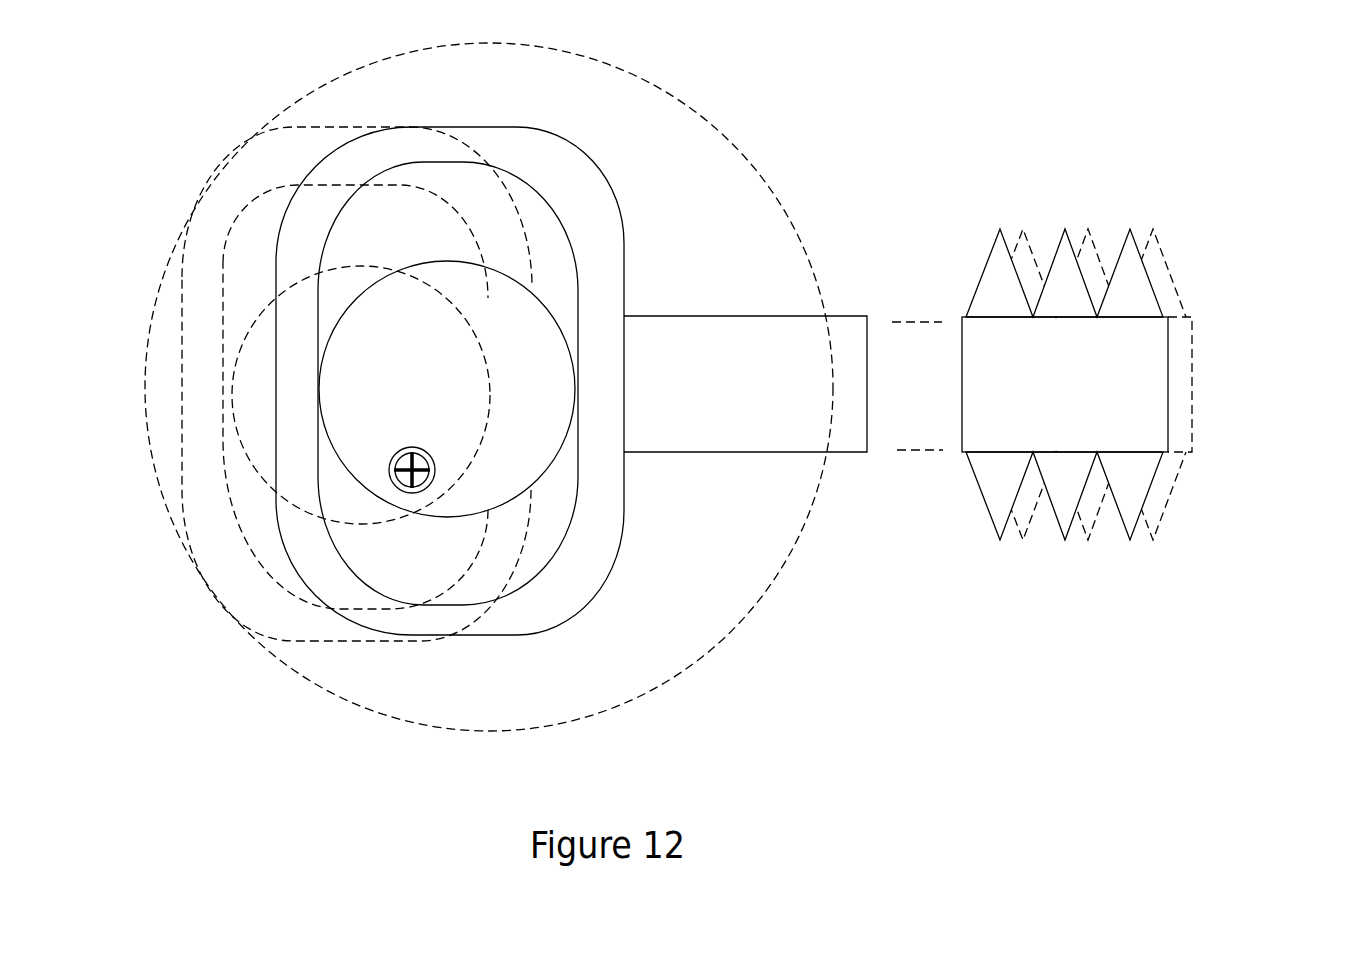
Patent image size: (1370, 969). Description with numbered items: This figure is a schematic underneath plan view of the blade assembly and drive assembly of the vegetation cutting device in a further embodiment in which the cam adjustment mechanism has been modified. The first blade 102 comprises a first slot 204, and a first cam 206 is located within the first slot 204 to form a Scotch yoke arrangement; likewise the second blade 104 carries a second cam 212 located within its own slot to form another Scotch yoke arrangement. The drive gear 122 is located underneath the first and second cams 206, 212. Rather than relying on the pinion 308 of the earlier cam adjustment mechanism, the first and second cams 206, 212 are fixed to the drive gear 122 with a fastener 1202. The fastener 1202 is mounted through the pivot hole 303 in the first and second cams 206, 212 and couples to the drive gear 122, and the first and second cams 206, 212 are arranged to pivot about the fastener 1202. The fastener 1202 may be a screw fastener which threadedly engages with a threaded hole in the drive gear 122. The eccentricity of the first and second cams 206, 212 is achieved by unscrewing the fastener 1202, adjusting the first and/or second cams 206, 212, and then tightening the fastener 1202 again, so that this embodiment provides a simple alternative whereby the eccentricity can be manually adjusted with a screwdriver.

The first blade 102 is at (1130, 229).
The second blade 104 is at (1192, 383).
The drive gear 122 is at (778, 583).
The first slot 204 is at (448, 163).
The first cam 206 is at (539, 301).
The second cam 212 is at (268, 487).
The pivot hole 303 is at (413, 495).
The pinion 308 is at (403, 354).
The fastener 1202 is at (430, 483).